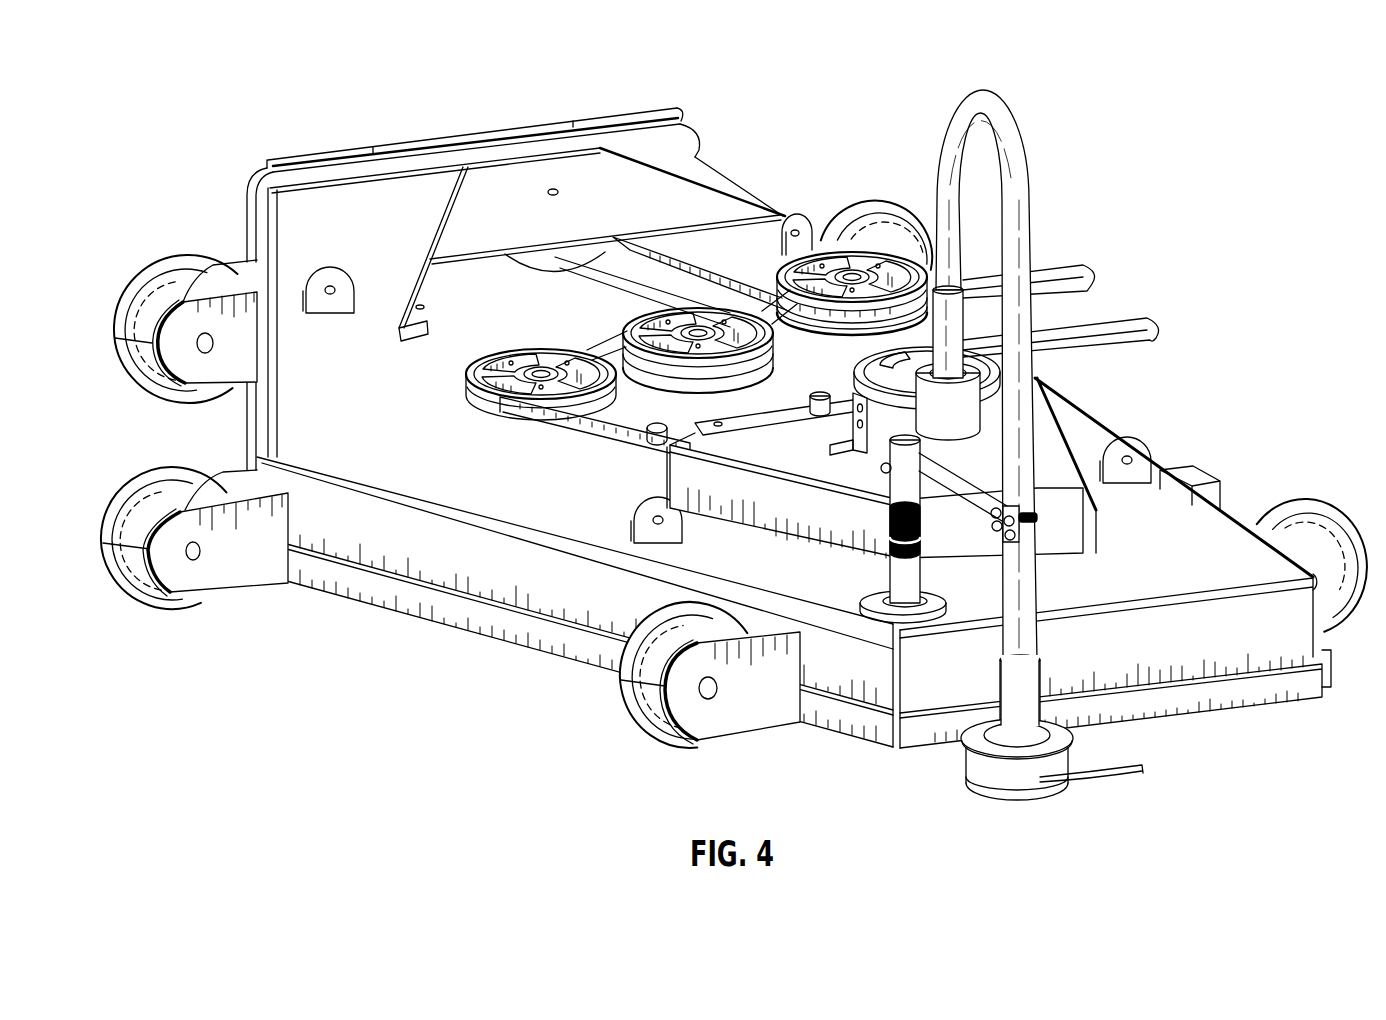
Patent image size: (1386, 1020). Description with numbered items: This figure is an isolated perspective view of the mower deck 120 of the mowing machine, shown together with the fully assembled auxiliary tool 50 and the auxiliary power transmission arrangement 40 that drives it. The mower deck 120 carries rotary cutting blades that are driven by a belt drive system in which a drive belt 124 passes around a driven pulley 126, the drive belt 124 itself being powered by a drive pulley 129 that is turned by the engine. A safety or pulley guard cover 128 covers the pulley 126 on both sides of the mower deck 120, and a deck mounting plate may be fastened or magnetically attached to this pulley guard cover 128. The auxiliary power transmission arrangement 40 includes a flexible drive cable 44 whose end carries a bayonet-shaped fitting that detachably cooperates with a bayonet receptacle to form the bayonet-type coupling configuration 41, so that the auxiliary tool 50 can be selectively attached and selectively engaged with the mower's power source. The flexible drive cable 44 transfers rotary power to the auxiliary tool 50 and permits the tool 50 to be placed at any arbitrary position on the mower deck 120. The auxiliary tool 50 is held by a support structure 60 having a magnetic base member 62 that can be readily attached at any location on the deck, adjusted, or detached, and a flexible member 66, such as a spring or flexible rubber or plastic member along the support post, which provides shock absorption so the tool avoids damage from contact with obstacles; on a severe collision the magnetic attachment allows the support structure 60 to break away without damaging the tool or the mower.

The mower deck 120 is at (315, 388).
The drive belt 124 is at (600, 440).
The driven pulley 126 is at (592, 266).
The pulley guard cover 128 is at (562, 178).
The drive pulley 129 is at (884, 274).
The auxiliary power transmission arrangement 40 is at (1036, 218).
The bayonet-type coupling configuration 41 is at (988, 413).
The flexible drive cable 44 is at (1007, 121).
The auxiliary tool 50 is at (1073, 760).
The support structure 60 is at (882, 510).
The magnetic base member 62 is at (938, 612).
The flexible member 66 is at (890, 538).